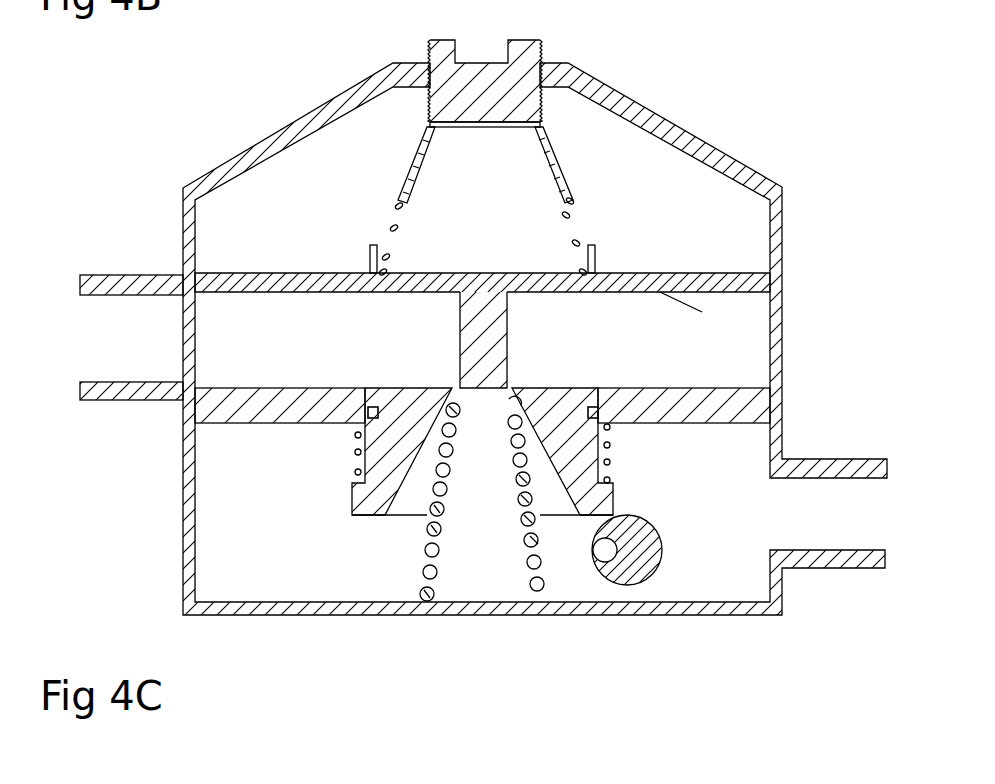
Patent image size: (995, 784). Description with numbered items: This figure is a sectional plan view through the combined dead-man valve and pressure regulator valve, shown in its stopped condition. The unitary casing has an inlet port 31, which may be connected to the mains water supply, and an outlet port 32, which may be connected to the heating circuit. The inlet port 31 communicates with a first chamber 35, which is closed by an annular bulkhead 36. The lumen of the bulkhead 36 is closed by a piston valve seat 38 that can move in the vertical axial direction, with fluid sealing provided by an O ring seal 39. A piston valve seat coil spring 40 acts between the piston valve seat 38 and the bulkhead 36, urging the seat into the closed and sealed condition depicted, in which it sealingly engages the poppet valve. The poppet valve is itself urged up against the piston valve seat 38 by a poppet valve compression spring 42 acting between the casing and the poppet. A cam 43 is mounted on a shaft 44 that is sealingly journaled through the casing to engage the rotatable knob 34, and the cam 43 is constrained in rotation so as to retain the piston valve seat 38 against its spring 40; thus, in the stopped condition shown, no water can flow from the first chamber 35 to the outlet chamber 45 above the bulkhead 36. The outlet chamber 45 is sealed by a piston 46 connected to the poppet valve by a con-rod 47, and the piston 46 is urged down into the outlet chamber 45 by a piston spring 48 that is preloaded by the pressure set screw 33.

The inlet port 31 is at (830, 459).
The outlet port 32 is at (93, 275).
The pressure set screw 33 is at (533, 40).
The rotatable knob 34 is at (745, 2).
The first chamber 35 is at (343, 602).
The annular bulkhead 36 is at (258, 388).
The piston valve seat 38 is at (423, 440).
The O ring seal 39 is at (366, 397).
The piston valve seat coil spring 40 is at (358, 452).
The poppet valve compression spring 42 is at (533, 553).
The cam 43 is at (655, 572).
The shaft 44 is at (607, 562).
The outlet chamber 45 is at (702, 312).
The piston 46 is at (623, 273).
The con-rod 47 is at (562, 273).
The piston spring 48 is at (572, 208).